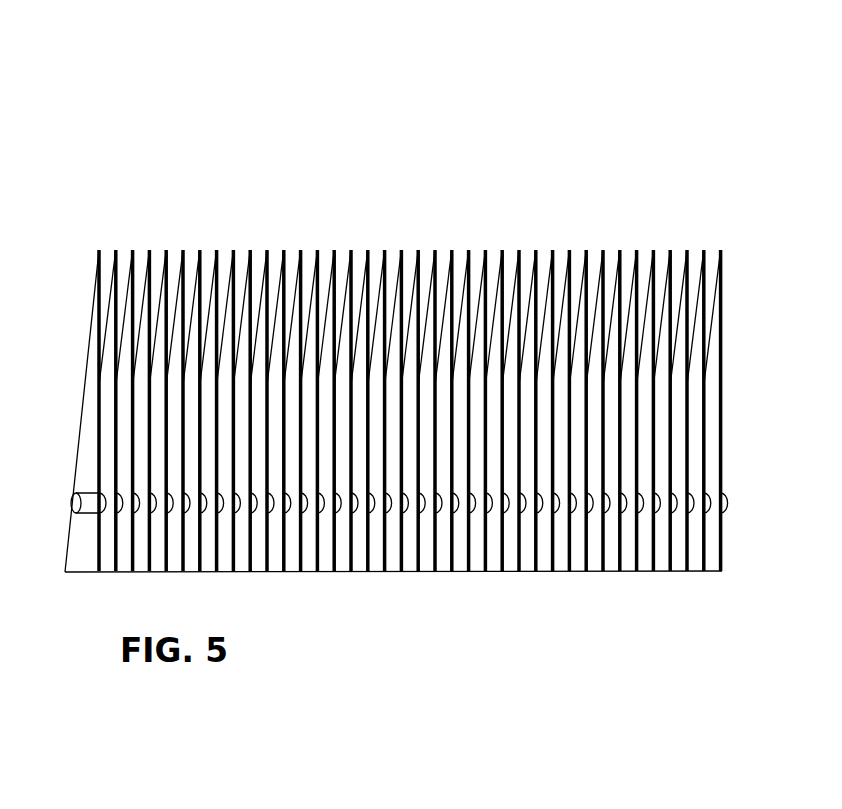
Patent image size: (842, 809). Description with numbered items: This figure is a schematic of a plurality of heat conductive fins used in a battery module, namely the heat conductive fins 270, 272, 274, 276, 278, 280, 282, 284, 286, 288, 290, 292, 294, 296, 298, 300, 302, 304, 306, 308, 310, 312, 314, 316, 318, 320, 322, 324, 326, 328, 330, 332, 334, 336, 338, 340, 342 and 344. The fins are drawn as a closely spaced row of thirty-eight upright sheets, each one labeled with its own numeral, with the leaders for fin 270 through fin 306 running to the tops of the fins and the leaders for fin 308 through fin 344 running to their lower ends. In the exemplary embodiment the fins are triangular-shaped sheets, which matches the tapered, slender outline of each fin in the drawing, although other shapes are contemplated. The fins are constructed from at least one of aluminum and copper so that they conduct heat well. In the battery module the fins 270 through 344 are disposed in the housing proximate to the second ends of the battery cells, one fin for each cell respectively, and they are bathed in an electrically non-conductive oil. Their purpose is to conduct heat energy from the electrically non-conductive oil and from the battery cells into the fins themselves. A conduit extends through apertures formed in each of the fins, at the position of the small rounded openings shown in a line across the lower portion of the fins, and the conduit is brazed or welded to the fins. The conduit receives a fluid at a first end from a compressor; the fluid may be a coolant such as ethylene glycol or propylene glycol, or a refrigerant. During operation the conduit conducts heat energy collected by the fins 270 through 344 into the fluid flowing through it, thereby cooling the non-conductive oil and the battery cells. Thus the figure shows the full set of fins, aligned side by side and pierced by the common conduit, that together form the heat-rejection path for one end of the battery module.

The heat conductive fin 270 is at (99, 250).
The heat conductive fin 272 is at (116, 250).
The heat conductive fin 274 is at (133, 250).
The heat conductive fin 276 is at (149, 250).
The heat conductive fin 278 is at (166, 250).
The heat conductive fin 280 is at (183, 250).
The heat conductive fin 282 is at (200, 250).
The heat conductive fin 284 is at (217, 250).
The heat conductive fin 286 is at (233, 250).
The heat conductive fin 288 is at (250, 250).
The heat conductive fin 290 is at (267, 250).
The heat conductive fin 292 is at (284, 250).
The heat conductive fin 294 is at (301, 250).
The heat conductive fin 296 is at (317, 250).
The heat conductive fin 298 is at (334, 250).
The heat conductive fin 300 is at (351, 250).
The heat conductive fin 302 is at (368, 250).
The heat conductive fin 304 is at (385, 250).
The heat conductive fin 306 is at (401, 250).
The heat conductive fin 308 is at (413, 572).
The heat conductive fin 310 is at (430, 572).
The heat conductive fin 312 is at (447, 572).
The heat conductive fin 314 is at (464, 572).
The heat conductive fin 316 is at (480, 572).
The heat conductive fin 318 is at (497, 572).
The heat conductive fin 320 is at (514, 572).
The heat conductive fin 322 is at (531, 572).
The heat conductive fin 324 is at (548, 572).
The heat conductive fin 326 is at (565, 572).
The heat conductive fin 328 is at (581, 572).
The heat conductive fin 330 is at (598, 572).
The heat conductive fin 332 is at (615, 572).
The heat conductive fin 334 is at (632, 572).
The heat conductive fin 336 is at (649, 572).
The heat conductive fin 338 is at (666, 572).
The heat conductive fin 340 is at (683, 572).
The heat conductive fin 342 is at (699, 572).
The heat conductive fin 344 is at (713, 572).